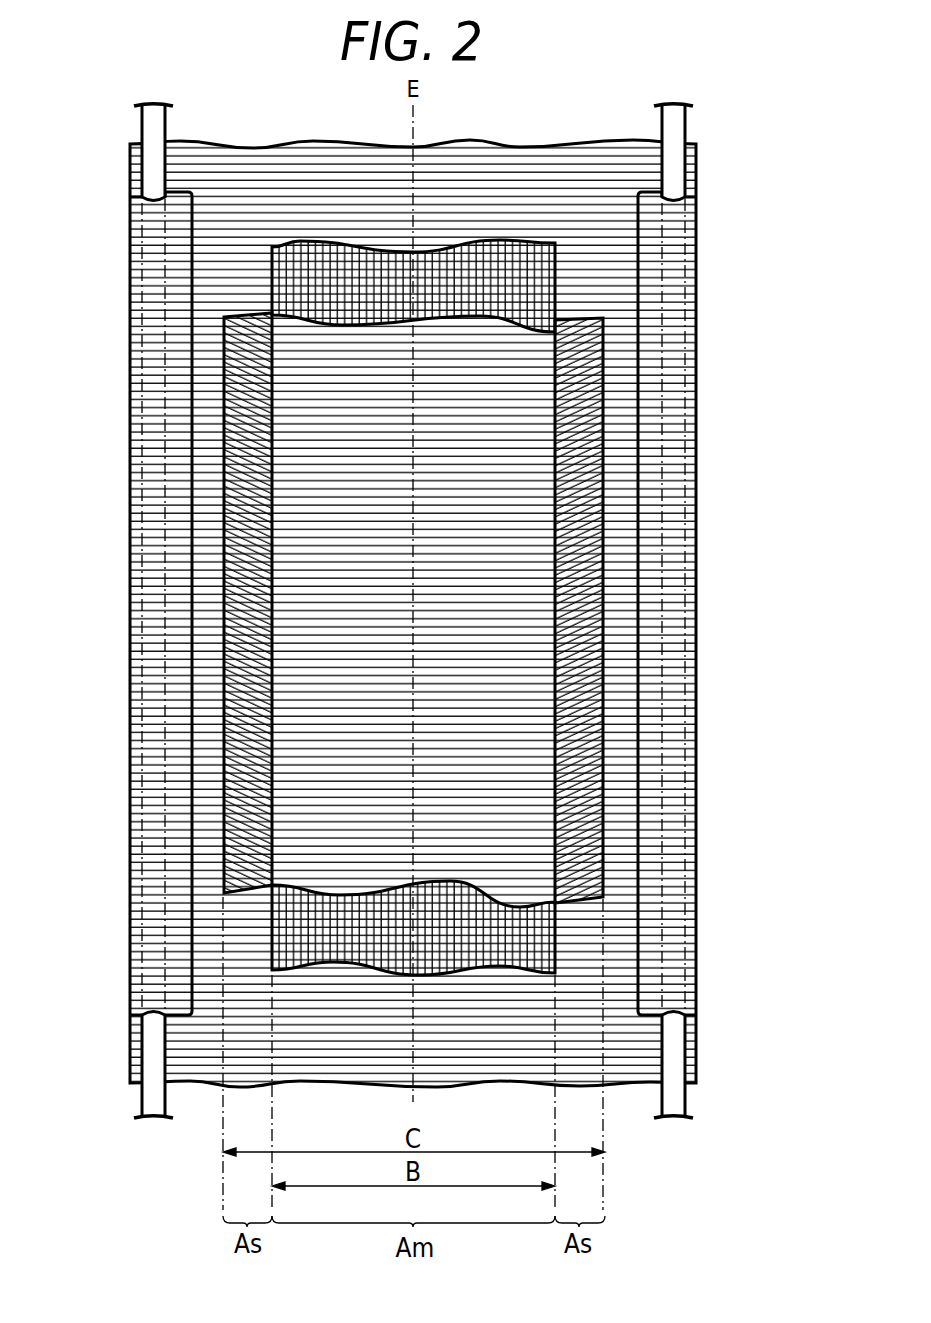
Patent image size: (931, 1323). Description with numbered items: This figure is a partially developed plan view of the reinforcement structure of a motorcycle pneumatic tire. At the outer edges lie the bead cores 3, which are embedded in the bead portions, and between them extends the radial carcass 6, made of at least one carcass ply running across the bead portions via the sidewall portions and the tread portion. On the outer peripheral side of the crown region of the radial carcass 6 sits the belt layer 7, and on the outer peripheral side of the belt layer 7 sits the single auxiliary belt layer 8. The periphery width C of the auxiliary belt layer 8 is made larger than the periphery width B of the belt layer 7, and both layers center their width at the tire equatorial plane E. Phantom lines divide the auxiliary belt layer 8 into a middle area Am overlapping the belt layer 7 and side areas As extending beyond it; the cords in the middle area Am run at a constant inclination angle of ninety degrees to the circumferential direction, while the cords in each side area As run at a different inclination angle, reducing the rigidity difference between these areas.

The bead core 3 is at (140, 1097).
The radial carcass 6 is at (615, 988).
The belt layer 7 is at (533, 938).
The auxiliary belt layer 8 is at (528, 790).